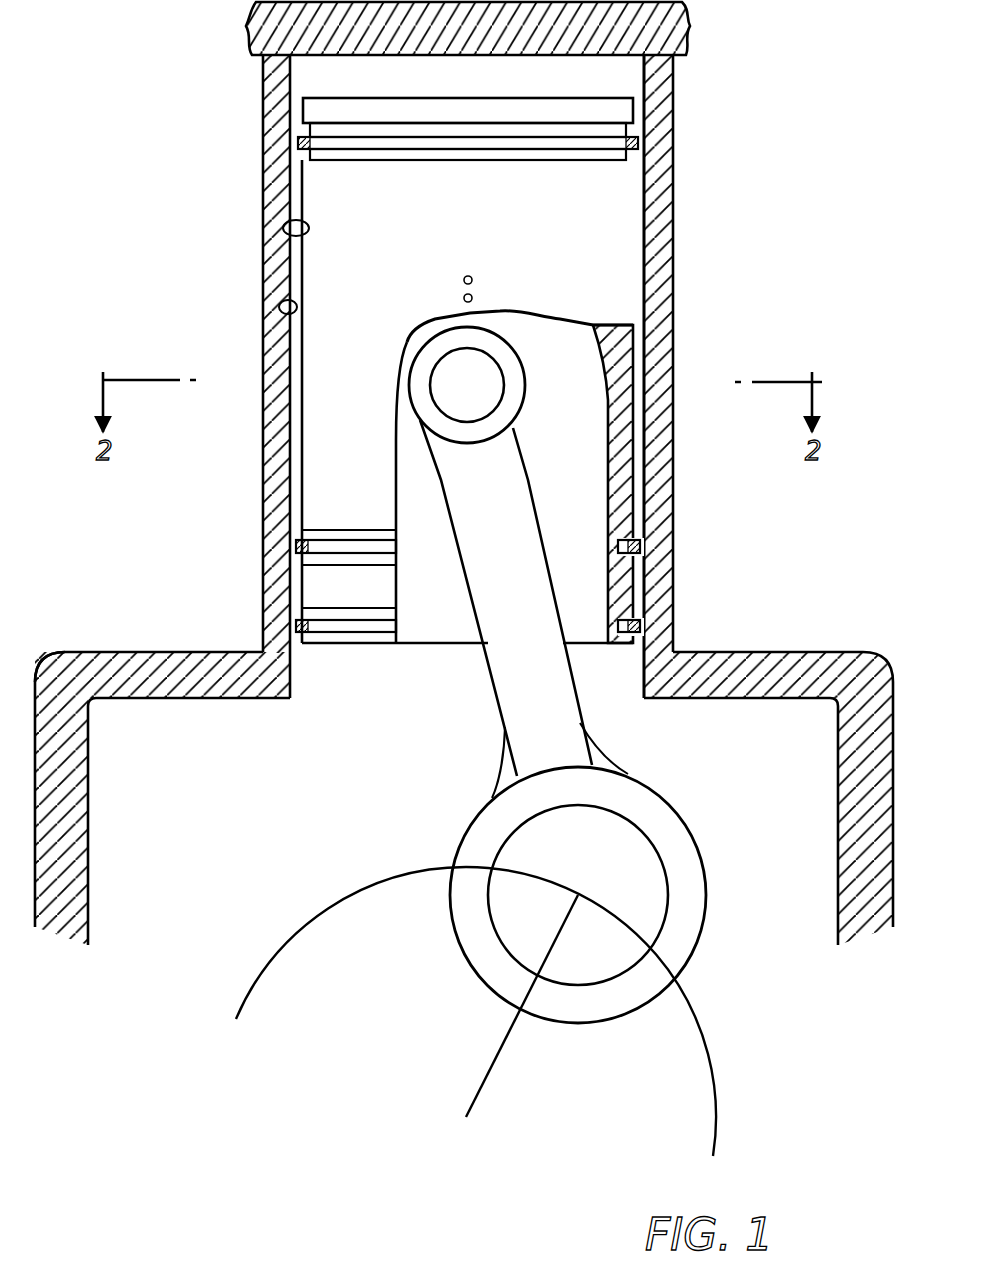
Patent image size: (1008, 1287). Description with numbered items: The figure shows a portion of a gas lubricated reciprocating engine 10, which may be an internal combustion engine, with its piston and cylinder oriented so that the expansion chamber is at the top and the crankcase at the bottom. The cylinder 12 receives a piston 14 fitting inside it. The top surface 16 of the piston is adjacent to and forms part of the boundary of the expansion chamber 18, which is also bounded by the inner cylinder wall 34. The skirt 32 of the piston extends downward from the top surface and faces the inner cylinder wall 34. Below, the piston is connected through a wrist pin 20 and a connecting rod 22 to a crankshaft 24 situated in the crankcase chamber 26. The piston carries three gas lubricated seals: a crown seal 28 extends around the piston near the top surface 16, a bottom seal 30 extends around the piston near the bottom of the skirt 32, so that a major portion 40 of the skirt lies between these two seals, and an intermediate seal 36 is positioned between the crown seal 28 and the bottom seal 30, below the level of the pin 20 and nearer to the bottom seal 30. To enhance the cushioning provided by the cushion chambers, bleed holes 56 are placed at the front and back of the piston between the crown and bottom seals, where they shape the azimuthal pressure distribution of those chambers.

The gas lubricated reciprocating engine 10 is at (140, 152).
The cylinder 12 is at (673, 212).
The piston 14 is at (634, 256).
The top surface 16 is at (507, 97).
The expansion chamber 18 is at (373, 90).
The wrist pin 20 is at (500, 387).
The connecting rod 22 is at (545, 562).
The crankshaft 24 is at (616, 868).
The crankcase chamber 26 is at (184, 801).
The crown seal 28 is at (645, 160).
The bottom seal 30 is at (642, 638).
The skirt 32 is at (290, 312).
The inner cylinder wall 34 is at (290, 222).
The intermediate seal 36 is at (640, 558).
The major portion of skirt 40 is at (357, 419).
The bleed holes 56 is at (473, 280).